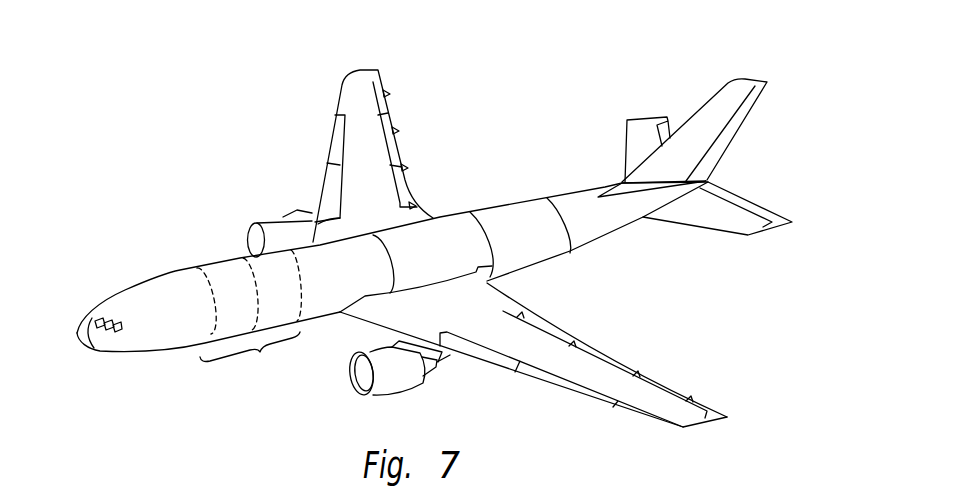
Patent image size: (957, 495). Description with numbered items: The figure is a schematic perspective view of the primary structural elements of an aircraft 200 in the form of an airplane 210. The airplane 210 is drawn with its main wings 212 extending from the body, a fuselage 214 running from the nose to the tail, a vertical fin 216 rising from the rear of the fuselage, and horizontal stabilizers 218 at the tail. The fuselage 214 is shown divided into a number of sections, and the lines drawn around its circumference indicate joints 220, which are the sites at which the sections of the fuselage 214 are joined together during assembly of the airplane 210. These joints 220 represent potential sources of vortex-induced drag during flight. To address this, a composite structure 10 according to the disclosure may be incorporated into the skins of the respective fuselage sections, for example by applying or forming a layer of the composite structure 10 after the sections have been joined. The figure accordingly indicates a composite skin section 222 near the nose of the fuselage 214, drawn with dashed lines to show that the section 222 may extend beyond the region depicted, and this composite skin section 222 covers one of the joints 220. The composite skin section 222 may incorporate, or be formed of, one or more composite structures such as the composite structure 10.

The aircraft 200 is at (136, 124).
The airplane 210 is at (142, 257).
The composite structure 10 is at (200, 259).
The joints 220 is at (226, 254).
The main wings 212 is at (392, 104).
The fuselage 214 is at (445, 212).
The vertical fin 216 is at (707, 89).
The horizontal stabilizers 218 is at (617, 136).
The composite skin section 222 is at (260, 352).